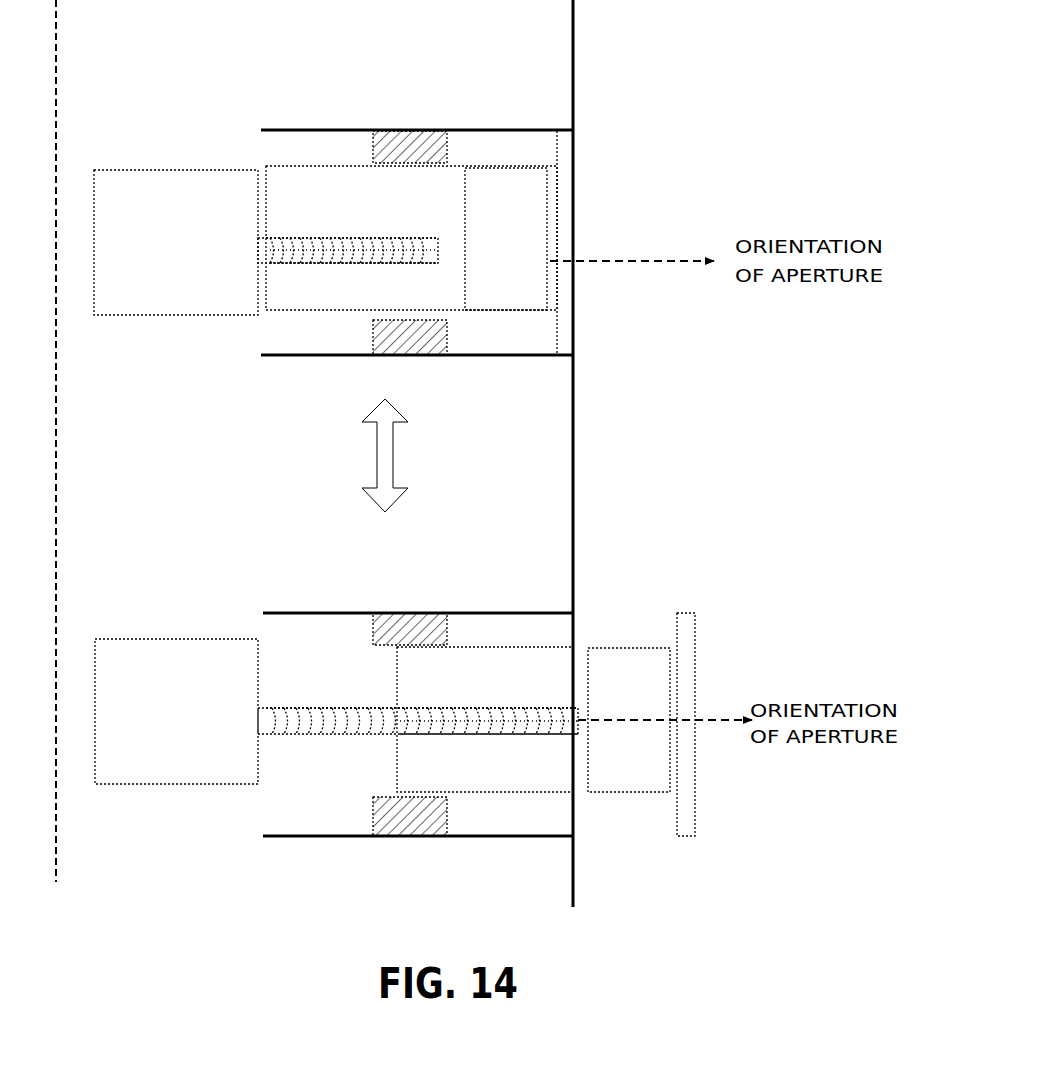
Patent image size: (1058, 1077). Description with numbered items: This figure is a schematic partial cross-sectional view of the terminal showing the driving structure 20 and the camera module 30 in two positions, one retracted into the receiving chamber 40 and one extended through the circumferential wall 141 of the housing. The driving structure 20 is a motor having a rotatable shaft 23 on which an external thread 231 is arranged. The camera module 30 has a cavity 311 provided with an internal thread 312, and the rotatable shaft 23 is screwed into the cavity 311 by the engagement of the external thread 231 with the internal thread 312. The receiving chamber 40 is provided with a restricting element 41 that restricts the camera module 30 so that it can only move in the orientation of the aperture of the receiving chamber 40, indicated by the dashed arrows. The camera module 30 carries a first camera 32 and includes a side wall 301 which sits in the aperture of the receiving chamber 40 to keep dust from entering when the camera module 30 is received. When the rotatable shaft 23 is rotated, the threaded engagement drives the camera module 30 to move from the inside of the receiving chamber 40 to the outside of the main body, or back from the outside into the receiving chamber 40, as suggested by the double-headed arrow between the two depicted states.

The driving structure 20 is at (143, 193).
The rotatable shaft 23 is at (265, 258).
The external thread 231 is at (267, 240).
The camera module 30 is at (453, 198).
The side wall 301 is at (578, 235).
The cavity 311 is at (298, 263).
The internal thread 312 is at (335, 240).
The first camera 32 is at (489, 302).
The receiving chamber 40 is at (538, 146).
The restricting element 41 is at (408, 145).
The circumferential wall 141 is at (577, 470).